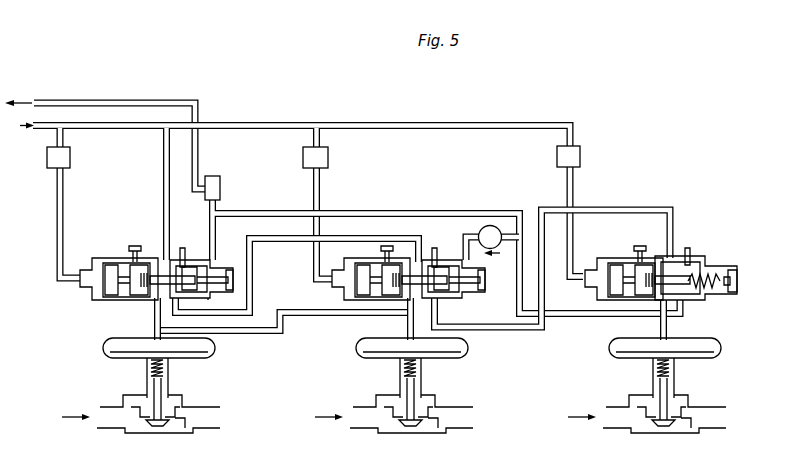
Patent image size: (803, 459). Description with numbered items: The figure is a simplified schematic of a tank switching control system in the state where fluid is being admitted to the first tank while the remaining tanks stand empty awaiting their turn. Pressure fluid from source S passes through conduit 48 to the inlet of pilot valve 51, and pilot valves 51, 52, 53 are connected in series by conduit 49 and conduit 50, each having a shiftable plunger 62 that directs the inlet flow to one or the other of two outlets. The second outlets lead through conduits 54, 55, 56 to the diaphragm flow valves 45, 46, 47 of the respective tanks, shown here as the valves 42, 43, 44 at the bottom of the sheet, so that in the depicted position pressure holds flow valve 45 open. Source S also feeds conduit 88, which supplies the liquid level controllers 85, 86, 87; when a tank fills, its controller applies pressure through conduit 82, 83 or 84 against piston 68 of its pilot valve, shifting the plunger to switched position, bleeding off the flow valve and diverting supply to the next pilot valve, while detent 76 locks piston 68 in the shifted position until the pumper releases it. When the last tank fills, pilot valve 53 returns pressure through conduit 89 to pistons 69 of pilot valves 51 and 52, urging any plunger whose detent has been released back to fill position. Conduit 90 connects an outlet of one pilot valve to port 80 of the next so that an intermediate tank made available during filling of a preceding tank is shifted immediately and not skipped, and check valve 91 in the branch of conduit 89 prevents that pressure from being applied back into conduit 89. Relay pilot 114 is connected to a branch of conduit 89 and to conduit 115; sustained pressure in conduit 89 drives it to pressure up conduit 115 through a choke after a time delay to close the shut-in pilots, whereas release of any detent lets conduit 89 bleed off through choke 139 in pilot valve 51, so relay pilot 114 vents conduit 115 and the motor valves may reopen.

The conduit 115 is at (113, 100).
The conduit 88 is at (506, 122).
The liquid level controller 85 is at (72, 157).
The liquid level controller 86 is at (330, 156).
The liquid level controller 87 is at (581, 153).
The conduit 82 is at (57, 195).
The conduit 83 is at (322, 177).
The conduit 84 is at (573, 175).
The conduit portion 48 is at (163, 174).
The relay pilot 114 is at (222, 178).
The conduit 89 is at (355, 212).
The conduit 49 is at (276, 241).
The conduit 90 is at (286, 312).
The conduit 50 is at (609, 208).
The conduit 54 is at (155, 322).
The conduit 55 is at (407, 331).
The conduit 56 is at (662, 325).
The check valve 91 is at (492, 225).
The choke 139 is at (210, 299).
The pilot valve 51 is at (152, 262).
The pilot valve 52 is at (429, 256).
The pilot valve 53 is at (681, 258).
The piston 68 is at (108, 264).
The detent 76 is at (130, 246).
The piston 69 is at (200, 268).
The port 80 is at (706, 260).
The plunger 62 is at (182, 247).
The valve 42 is at (210, 408).
The valve 43 is at (449, 406).
The valve 44 is at (702, 406).
The flow valve 45 is at (147, 378).
The flow valve 46 is at (400, 382).
The flow valve 47 is at (653, 382).